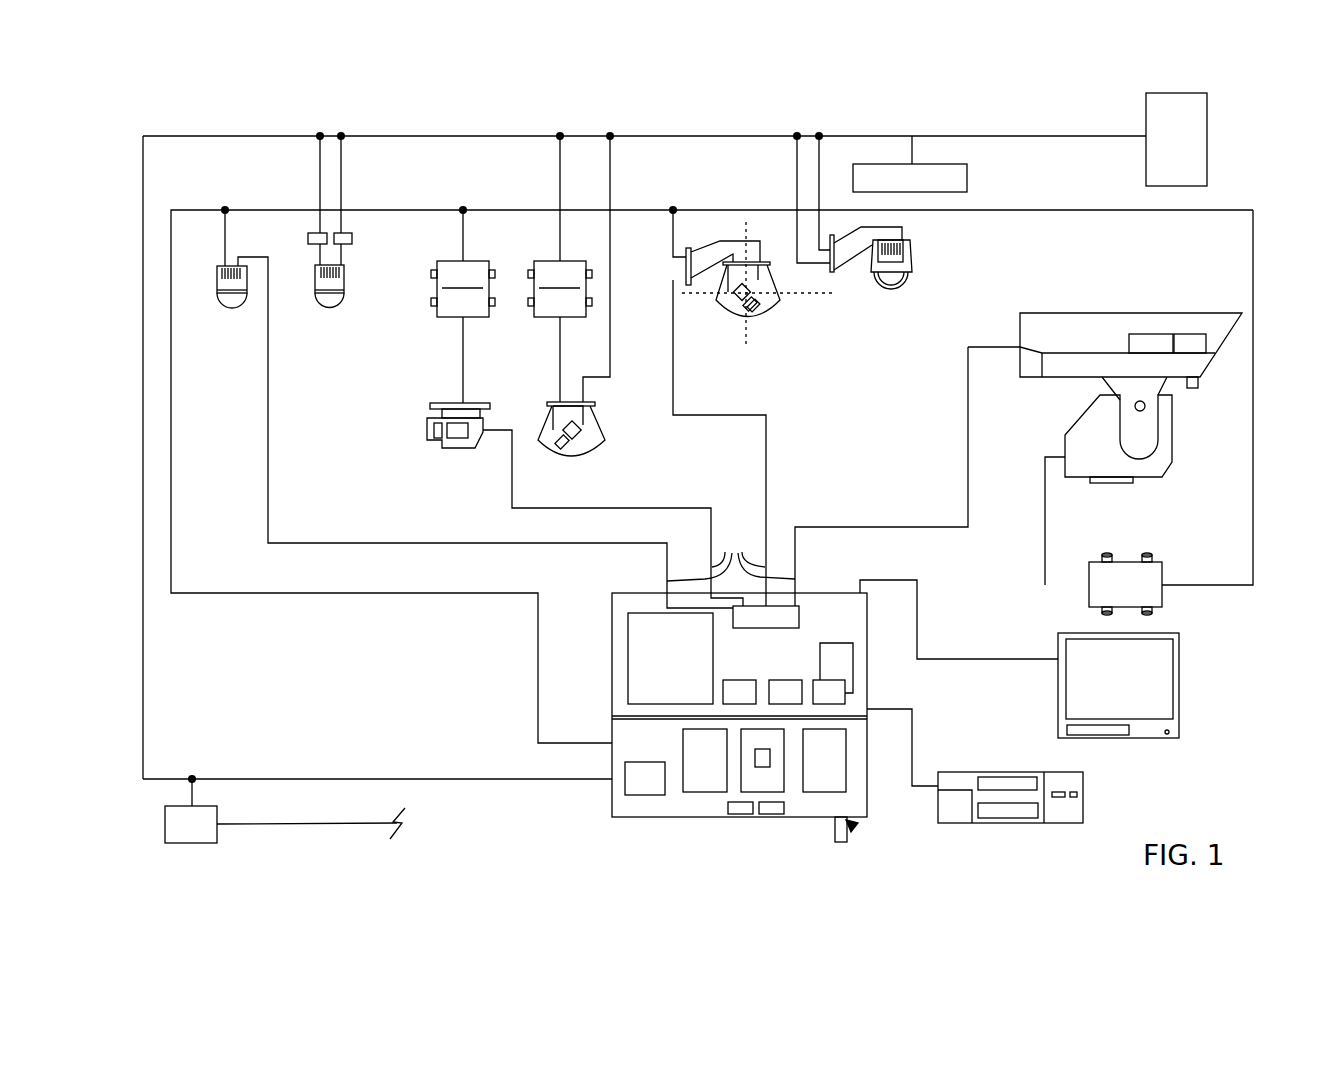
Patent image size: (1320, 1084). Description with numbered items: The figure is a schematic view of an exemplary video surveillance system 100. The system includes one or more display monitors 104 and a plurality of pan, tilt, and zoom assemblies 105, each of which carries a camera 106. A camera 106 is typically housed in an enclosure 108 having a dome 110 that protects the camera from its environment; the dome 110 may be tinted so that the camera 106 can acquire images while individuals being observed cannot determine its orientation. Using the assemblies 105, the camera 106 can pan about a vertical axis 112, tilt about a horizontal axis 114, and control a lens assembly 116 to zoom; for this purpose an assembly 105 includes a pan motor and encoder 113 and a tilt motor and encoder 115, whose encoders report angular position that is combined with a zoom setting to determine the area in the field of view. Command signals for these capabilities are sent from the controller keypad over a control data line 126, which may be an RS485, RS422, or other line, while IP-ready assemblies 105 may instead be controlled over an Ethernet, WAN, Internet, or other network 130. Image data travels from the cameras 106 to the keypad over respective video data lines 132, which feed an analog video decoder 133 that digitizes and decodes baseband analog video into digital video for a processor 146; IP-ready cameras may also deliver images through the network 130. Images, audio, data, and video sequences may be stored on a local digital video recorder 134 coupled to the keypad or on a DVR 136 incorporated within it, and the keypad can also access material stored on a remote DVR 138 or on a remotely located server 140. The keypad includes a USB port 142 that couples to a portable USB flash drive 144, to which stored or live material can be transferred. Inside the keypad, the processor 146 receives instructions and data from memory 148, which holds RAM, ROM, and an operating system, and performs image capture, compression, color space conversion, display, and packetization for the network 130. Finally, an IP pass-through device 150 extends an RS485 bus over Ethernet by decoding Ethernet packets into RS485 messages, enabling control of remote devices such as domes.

The video surveillance system 100 is at (370, 104).
The display monitor 104 is at (1180, 668).
The pan, tilt, and zoom (PTZ) assembly 105 is at (709, 375).
The camera 106 is at (570, 450).
The enclosure 108 is at (217, 277).
The dome 110 is at (233, 307).
The vertical axis 112 is at (747, 348).
The pan motor and encoder 113 is at (511, 226).
The horizontal axis 114 is at (705, 293).
The tilt motor and encoder 115 is at (511, 293).
The lens assembly 116 is at (760, 306).
The control data line 126 is at (408, 594).
The network 130 is at (463, 780).
The video data line 132 is at (731, 554).
The analog video decoder 133 is at (763, 629).
The local digital video recorder (DVR) 134 is at (1083, 796).
The DVR 136 is at (853, 670).
The remote DVR 138 is at (967, 172).
The server 140 is at (1207, 172).
The Universal Serial Bus (USB) port 142 is at (852, 827).
The portable USB flash drive 144 is at (847, 845).
The processor 146 is at (732, 815).
The memory 148 is at (773, 815).
The IP pass-through device 150 is at (217, 835).